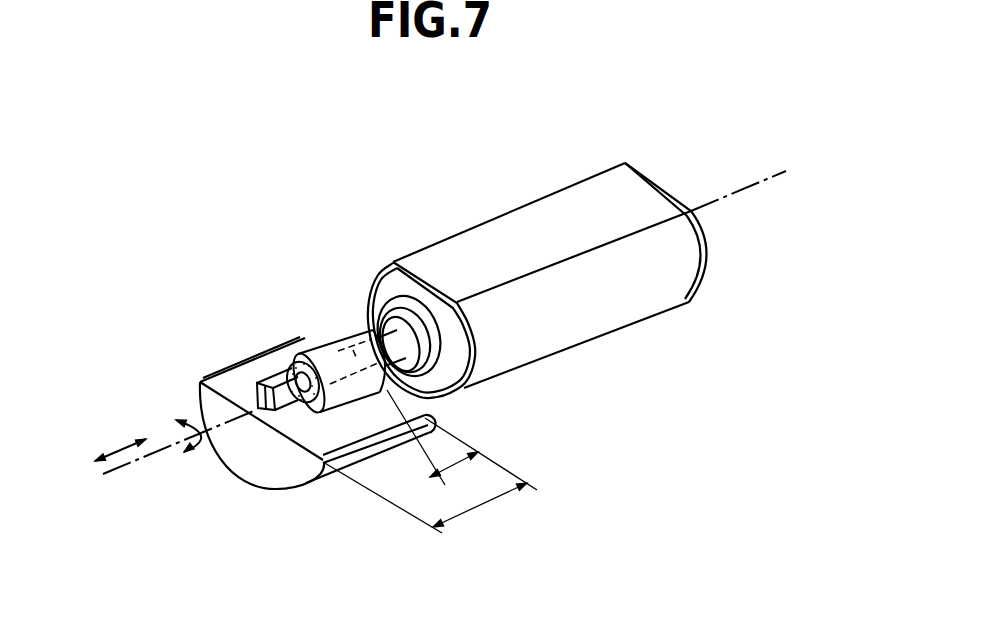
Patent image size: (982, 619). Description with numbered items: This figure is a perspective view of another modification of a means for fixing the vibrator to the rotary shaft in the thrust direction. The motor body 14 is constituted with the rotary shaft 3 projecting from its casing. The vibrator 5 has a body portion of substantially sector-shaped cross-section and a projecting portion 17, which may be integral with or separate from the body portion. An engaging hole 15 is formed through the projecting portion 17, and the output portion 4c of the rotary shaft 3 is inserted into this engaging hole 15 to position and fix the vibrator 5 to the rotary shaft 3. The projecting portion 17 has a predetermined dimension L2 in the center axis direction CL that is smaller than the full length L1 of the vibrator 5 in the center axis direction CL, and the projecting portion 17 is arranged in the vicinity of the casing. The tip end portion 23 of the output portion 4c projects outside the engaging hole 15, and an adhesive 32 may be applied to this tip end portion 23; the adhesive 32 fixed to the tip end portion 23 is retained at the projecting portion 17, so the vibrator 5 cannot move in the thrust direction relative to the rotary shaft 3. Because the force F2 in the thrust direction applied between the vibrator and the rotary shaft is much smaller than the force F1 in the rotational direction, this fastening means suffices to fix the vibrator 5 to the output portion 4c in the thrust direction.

The motor body 14 is at (488, 214).
The rotary shaft 3 is at (385, 318).
The projecting portion 17 is at (343, 330).
The engaging hole 15 is at (338, 348).
The adhesive 32 is at (291, 412).
The tip end portion 23 is at (278, 412).
The vibrator 5 is at (268, 366).
The output portion 4c is at (260, 362).
The full length L1 is at (425, 497).
The predetermined dimension L2 is at (462, 440).
The force in the rotational direction F1 is at (188, 411).
The force in the thrust direction F2 is at (118, 441).
The center axis direction CL is at (136, 458).